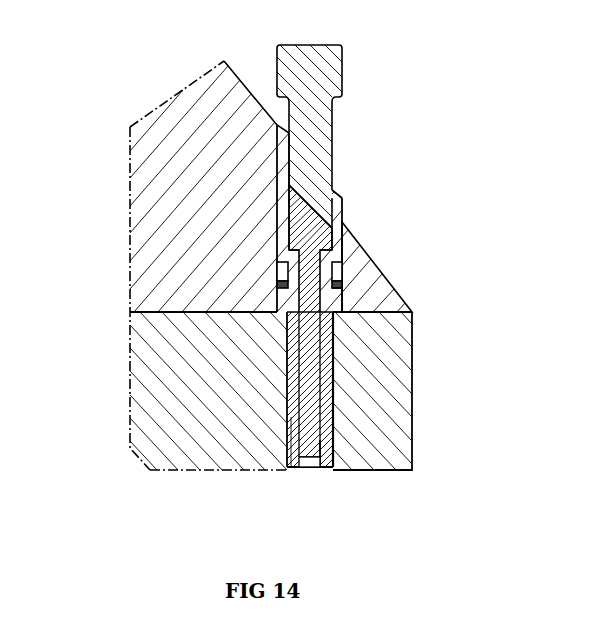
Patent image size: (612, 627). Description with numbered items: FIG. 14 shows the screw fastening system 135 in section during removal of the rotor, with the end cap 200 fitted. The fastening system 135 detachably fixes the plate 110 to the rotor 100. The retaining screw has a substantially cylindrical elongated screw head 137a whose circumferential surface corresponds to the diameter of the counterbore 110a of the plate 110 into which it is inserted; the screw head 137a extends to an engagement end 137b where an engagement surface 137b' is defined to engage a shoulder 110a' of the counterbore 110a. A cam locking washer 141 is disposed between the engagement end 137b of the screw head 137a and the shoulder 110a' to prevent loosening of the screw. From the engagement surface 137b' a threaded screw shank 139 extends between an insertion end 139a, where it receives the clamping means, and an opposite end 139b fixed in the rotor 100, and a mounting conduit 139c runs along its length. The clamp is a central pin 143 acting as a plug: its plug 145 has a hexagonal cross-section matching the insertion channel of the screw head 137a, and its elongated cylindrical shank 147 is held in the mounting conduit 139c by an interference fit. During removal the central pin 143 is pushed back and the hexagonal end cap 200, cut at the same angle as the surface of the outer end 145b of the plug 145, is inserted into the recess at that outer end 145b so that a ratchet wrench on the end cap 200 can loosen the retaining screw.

The rotor 100 is at (378, 435).
The plate 110 is at (337, 240).
The counterbore 110a is at (382, 261).
The shoulder 110a' is at (397, 300).
The screw fastening system 135 is at (291, 262).
The screw head 137a is at (344, 230).
The engagement end 137b is at (173, 279).
The engagement surface 137b' is at (173, 308).
The screw shank 139 is at (288, 445).
The insertion end 139a is at (337, 338).
The opposite end 139b is at (336, 448).
The mounting conduit 139c is at (310, 463).
The cam locking washer 141 is at (343, 283).
The central pin 143 is at (290, 313).
The plug 145 is at (307, 229).
The outer end 145b is at (318, 208).
The shank 147 is at (309, 367).
The end cap 200 is at (318, 76).